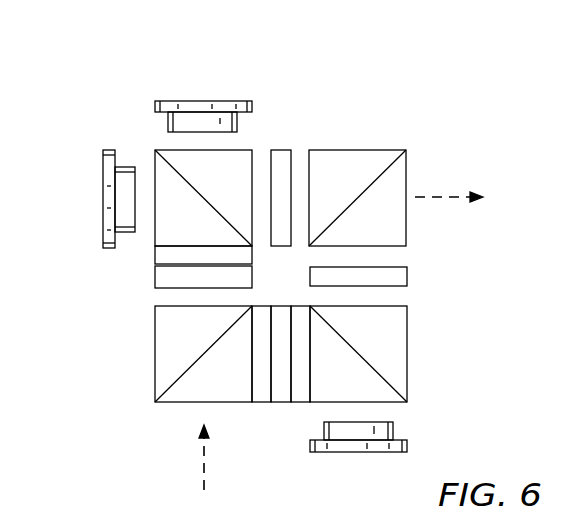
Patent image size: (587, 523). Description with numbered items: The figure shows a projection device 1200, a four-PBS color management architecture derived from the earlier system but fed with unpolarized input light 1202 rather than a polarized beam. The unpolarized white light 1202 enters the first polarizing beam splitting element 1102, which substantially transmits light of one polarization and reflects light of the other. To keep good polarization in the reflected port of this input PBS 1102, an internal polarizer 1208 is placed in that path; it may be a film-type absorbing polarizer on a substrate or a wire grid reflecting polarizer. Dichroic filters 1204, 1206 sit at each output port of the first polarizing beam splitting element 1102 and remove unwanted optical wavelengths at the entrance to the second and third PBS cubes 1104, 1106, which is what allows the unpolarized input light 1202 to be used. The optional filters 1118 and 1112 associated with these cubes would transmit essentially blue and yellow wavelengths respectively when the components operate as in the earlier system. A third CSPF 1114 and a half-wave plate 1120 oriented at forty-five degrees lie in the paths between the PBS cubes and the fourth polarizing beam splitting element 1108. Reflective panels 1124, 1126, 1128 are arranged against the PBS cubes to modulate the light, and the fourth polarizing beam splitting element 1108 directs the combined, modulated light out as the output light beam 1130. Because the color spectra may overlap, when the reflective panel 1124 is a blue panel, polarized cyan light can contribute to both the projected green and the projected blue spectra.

The projection device 1200 is at (376, 71).
The first polarizing beam splitting element 1102 is at (155, 355).
The second polarizing beam splitting element 1104 is at (407, 355).
The third polarizing beam splitting element 1106 is at (170, 150).
The fourth polarizing beam splitting element 1108 is at (357, 150).
The second CSPF 1112 is at (155, 280).
The third CSPF 1114 is at (281, 150).
The half-wave plate oriented at 0° 1118 is at (300, 403).
The half-wave plate oriented at 45° 1120 is at (407, 277).
The second reflective panel 1124 is at (357, 452).
The third reflective panel 1126 is at (103, 200).
The polarized input light beam / reflective panel 1128 is at (183, 101).
The output light beam 1130 is at (443, 197).
The unpolarized input light 1202 is at (204, 464).
The dichroic filter 1204 is at (155, 257).
The dichroic filter 1206 is at (280, 306).
The internal polarizer 1208 is at (272, 403).